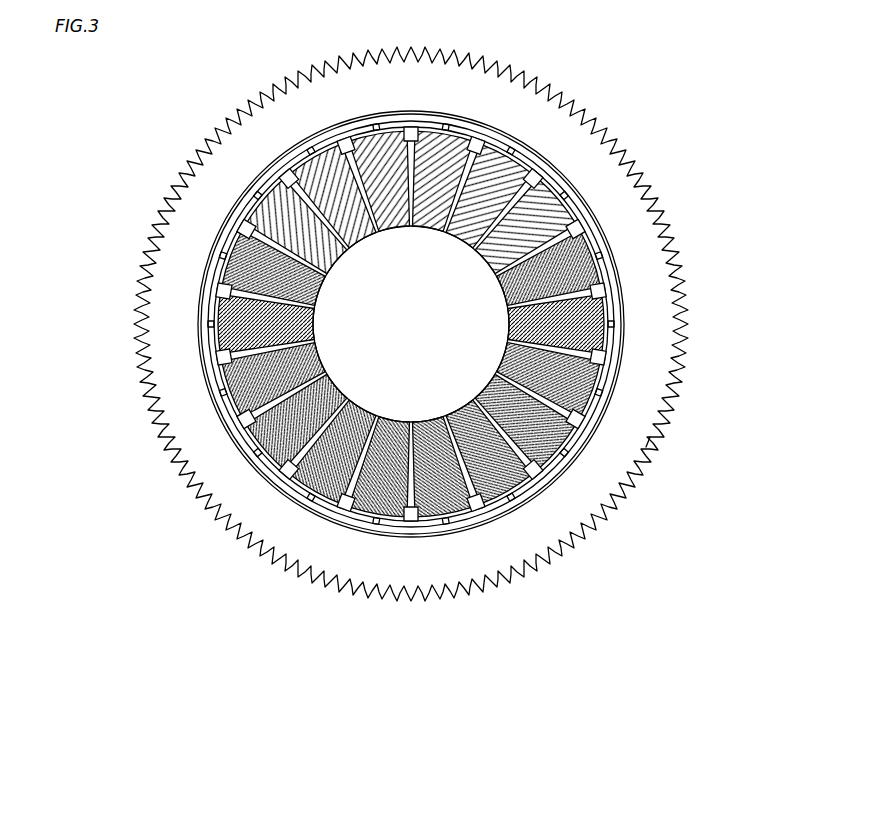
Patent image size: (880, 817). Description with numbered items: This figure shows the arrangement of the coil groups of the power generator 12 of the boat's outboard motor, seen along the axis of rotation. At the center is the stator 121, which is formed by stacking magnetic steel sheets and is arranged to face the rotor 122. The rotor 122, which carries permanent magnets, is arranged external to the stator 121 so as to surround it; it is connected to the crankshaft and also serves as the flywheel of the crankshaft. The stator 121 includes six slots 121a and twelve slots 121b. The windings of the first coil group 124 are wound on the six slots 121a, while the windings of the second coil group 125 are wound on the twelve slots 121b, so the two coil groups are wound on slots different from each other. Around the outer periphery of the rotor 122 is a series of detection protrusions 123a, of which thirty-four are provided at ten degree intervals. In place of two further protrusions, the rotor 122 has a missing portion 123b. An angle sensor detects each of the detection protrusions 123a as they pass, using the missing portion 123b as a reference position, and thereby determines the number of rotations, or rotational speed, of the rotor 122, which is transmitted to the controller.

The power generator 12 is at (405, 352).
The stator 121 is at (404, 330).
The slots 121a is at (388, 140).
The slots 121b is at (600, 238).
The rotor 122 is at (628, 186).
The detection protrusions 123a is at (343, 136).
The missing portion 123b is at (652, 440).
The first coil group 124 is at (451, 100).
The second coil group 125 is at (432, 546).